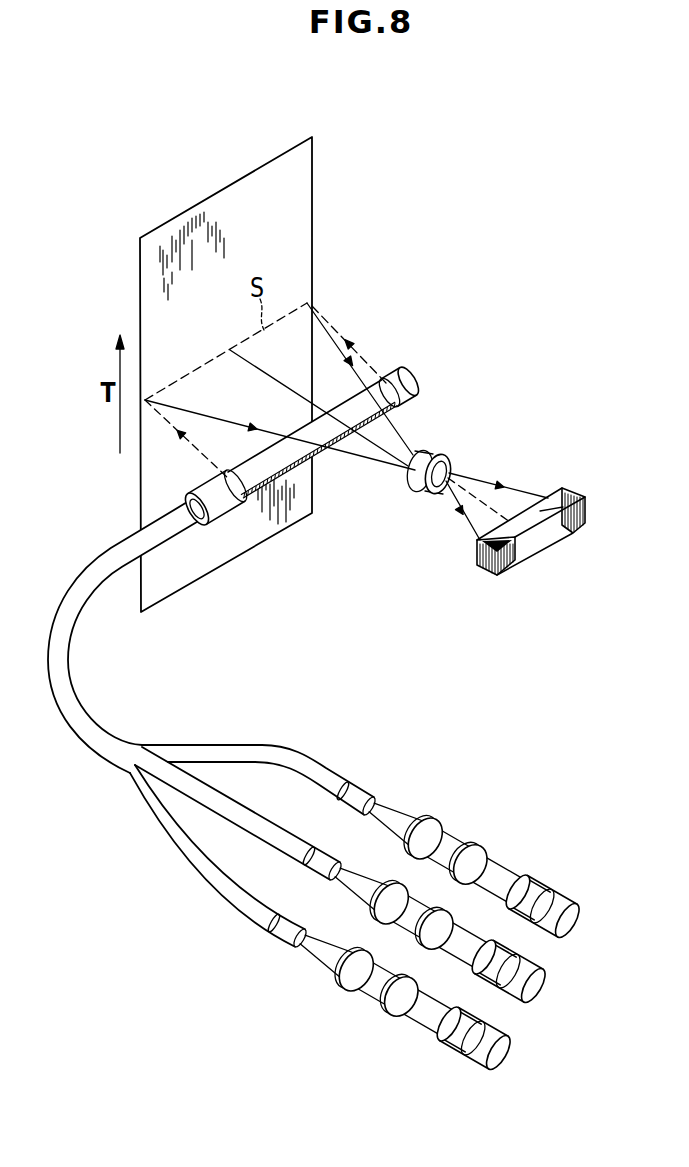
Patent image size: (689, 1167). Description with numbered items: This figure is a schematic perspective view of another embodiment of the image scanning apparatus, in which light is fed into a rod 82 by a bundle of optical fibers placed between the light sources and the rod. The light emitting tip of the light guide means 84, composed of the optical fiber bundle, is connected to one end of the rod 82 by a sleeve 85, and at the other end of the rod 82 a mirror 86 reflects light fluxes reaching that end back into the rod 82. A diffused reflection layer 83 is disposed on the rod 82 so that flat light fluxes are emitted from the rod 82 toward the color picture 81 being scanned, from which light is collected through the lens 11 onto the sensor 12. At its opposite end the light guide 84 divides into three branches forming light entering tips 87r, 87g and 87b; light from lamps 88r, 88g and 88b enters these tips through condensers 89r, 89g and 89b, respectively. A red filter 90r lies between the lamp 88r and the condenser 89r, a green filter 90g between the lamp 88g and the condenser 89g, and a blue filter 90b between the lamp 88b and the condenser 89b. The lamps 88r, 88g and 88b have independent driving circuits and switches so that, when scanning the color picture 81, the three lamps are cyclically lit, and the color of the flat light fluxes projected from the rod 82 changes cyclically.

The lens 11 is at (441, 452).
The image sensor 12 is at (572, 500).
The color picture 81 is at (304, 233).
The rod 82 is at (357, 411).
The diffused reflection layer 83 is at (292, 500).
The light guide means 84 is at (110, 550).
The sleeve 85 is at (230, 506).
The mirror 86 is at (410, 372).
The light entering tip 87r is at (362, 785).
The light entering tip 87g is at (316, 852).
The light entering tip 87b is at (289, 912).
The lamp 88r is at (542, 880).
The lamp 88g is at (508, 945).
The lamp 88b is at (470, 1012).
The condenser 89r is at (433, 814).
The condenser 89g is at (393, 882).
The condenser 89b is at (360, 948).
The red filter 90r is at (480, 842).
The green filter 90g is at (447, 918).
The blue filter 90b is at (413, 986).